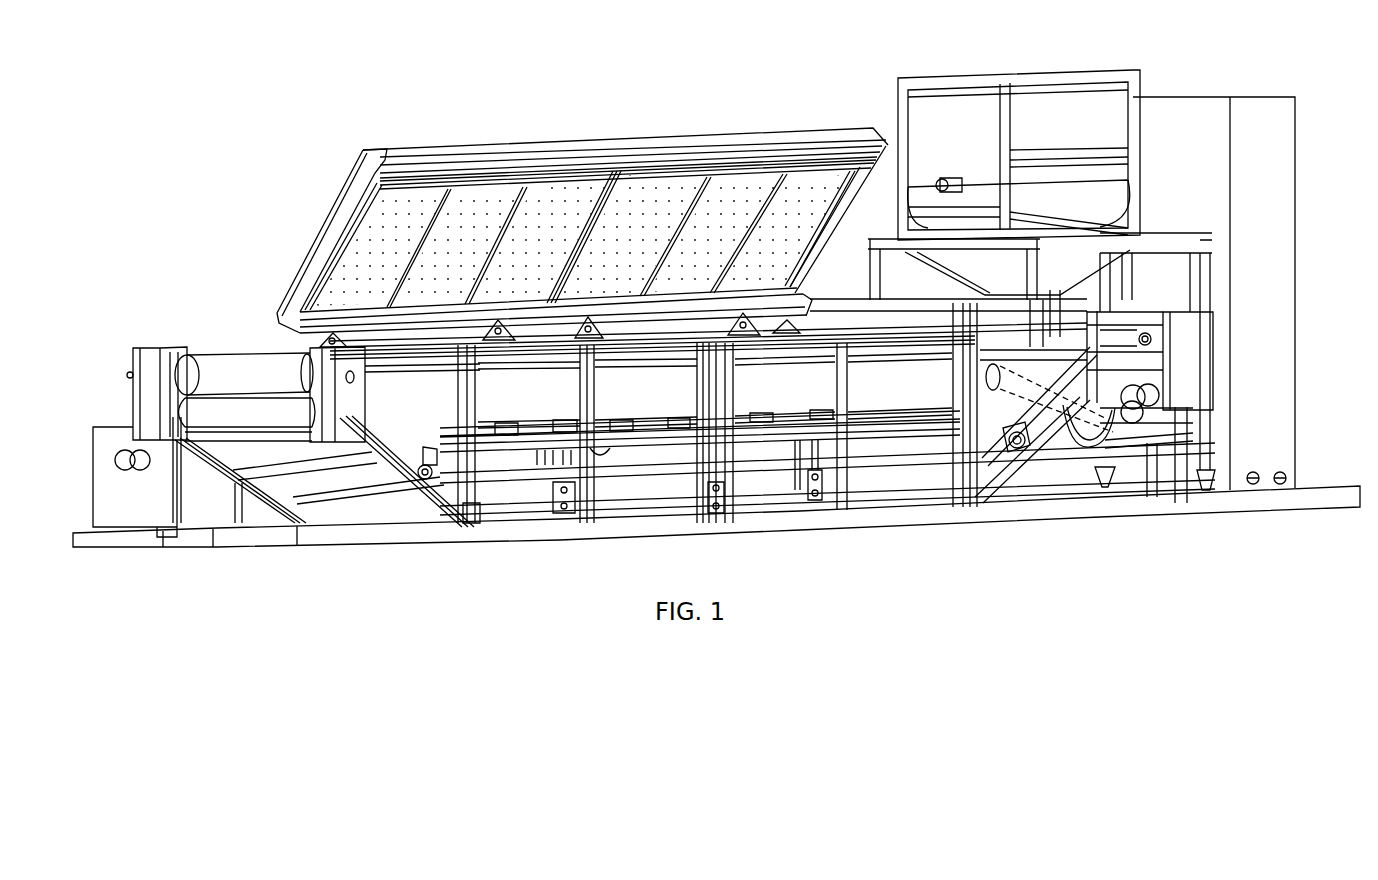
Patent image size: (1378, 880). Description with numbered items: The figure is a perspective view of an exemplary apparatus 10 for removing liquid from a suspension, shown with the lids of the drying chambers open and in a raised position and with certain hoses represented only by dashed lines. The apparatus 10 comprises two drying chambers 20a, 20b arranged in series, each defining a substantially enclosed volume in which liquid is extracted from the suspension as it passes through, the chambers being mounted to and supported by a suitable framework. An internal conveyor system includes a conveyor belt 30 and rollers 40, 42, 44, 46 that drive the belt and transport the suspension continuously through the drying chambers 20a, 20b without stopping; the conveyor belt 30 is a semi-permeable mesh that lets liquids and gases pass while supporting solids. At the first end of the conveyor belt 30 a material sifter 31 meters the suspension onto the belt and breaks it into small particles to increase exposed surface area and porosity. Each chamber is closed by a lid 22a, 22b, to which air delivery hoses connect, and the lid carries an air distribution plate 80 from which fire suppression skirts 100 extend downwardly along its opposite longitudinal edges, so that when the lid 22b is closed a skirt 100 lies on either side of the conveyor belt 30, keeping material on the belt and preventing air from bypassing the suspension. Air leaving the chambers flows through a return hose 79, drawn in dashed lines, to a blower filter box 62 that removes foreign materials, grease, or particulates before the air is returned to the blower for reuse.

The apparatus 10 is at (236, 109).
The fire suppression skirt 100 is at (380, 186).
The lid 22a is at (760, 136).
The lid 22b is at (497, 147).
The air distribution plate 80 is at (550, 193).
The material sifter 31 is at (1075, 107).
The conveyor belt 30 is at (240, 355).
The roller 40 is at (180, 350).
The roller 42 is at (427, 472).
The roller 44 is at (1012, 455).
The roller 46 is at (1147, 327).
The blower filter box 62 is at (1200, 380).
The return hose 79 is at (1090, 447).
The drying chamber 20a is at (797, 333).
The drying chamber 20b is at (540, 357).